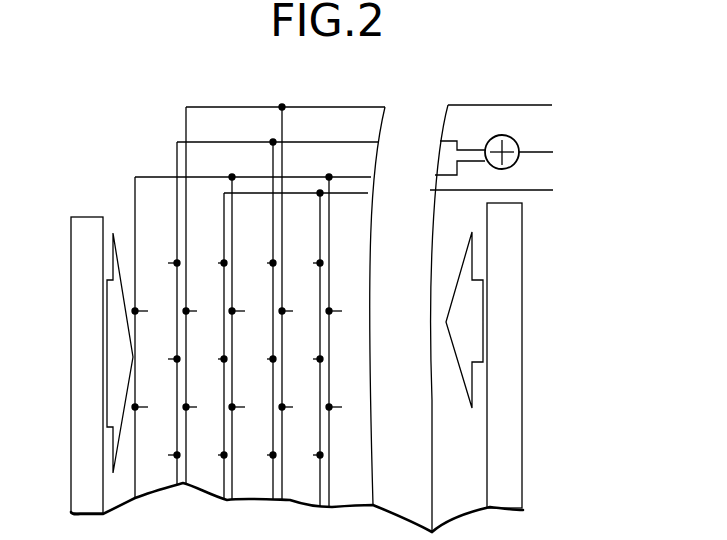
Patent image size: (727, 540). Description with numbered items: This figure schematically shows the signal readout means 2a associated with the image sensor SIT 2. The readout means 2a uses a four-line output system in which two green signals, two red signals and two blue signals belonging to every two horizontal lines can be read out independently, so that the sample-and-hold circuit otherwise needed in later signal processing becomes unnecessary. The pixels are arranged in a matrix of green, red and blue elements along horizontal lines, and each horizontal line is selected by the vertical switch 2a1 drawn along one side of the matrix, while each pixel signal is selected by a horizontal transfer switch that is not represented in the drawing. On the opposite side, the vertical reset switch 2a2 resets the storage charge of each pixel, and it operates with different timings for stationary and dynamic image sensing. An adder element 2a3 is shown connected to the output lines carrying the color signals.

The SIT 2 is at (149, 107).
The signal readout means 2a is at (313, 104).
The vertical switch 2a1 is at (93, 216).
The vertical reset switch 2a2 is at (522, 244).
The adder (summing circuit) 2a3 is at (515, 165).